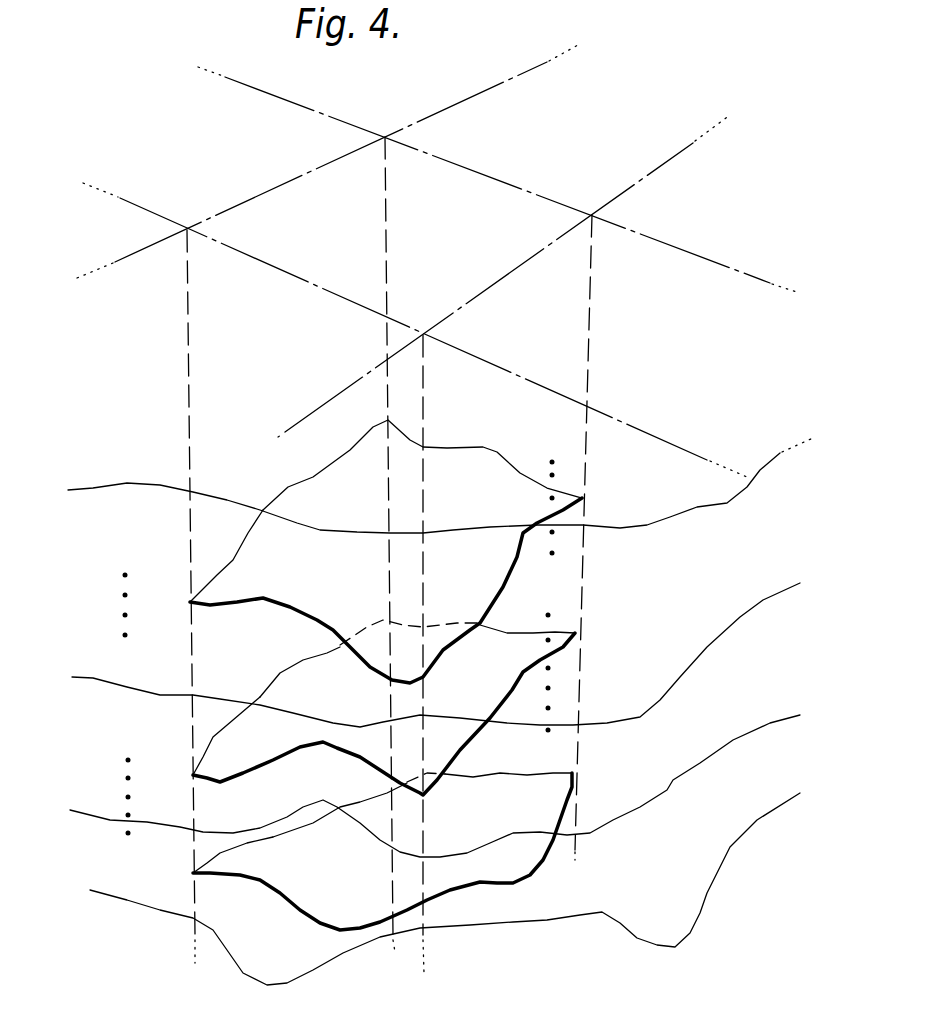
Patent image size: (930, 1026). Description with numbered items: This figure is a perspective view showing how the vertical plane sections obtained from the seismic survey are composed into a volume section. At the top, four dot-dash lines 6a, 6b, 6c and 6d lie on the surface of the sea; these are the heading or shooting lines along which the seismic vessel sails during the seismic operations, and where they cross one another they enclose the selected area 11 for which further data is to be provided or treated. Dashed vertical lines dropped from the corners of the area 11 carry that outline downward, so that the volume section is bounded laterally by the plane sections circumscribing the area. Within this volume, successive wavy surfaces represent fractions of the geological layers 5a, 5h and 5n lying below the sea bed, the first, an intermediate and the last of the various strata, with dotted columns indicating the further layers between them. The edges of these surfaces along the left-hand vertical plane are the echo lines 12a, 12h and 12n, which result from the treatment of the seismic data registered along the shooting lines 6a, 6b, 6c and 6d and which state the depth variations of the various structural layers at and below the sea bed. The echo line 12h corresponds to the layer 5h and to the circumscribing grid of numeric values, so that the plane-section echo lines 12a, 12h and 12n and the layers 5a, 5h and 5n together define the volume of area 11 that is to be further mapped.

The area 11 is at (361, 236).
The shooting line 6a is at (317, 287).
The shooting line 6b is at (510, 273).
The shooting line 6c is at (503, 180).
The shooting line 6d is at (283, 185).
The geological layer 5a is at (520, 483).
The geological layer 5h is at (530, 630).
The geological layer 5n is at (534, 783).
The echo line 12a is at (217, 575).
The echo line 12h is at (213, 737).
The echo line 12n is at (200, 865).